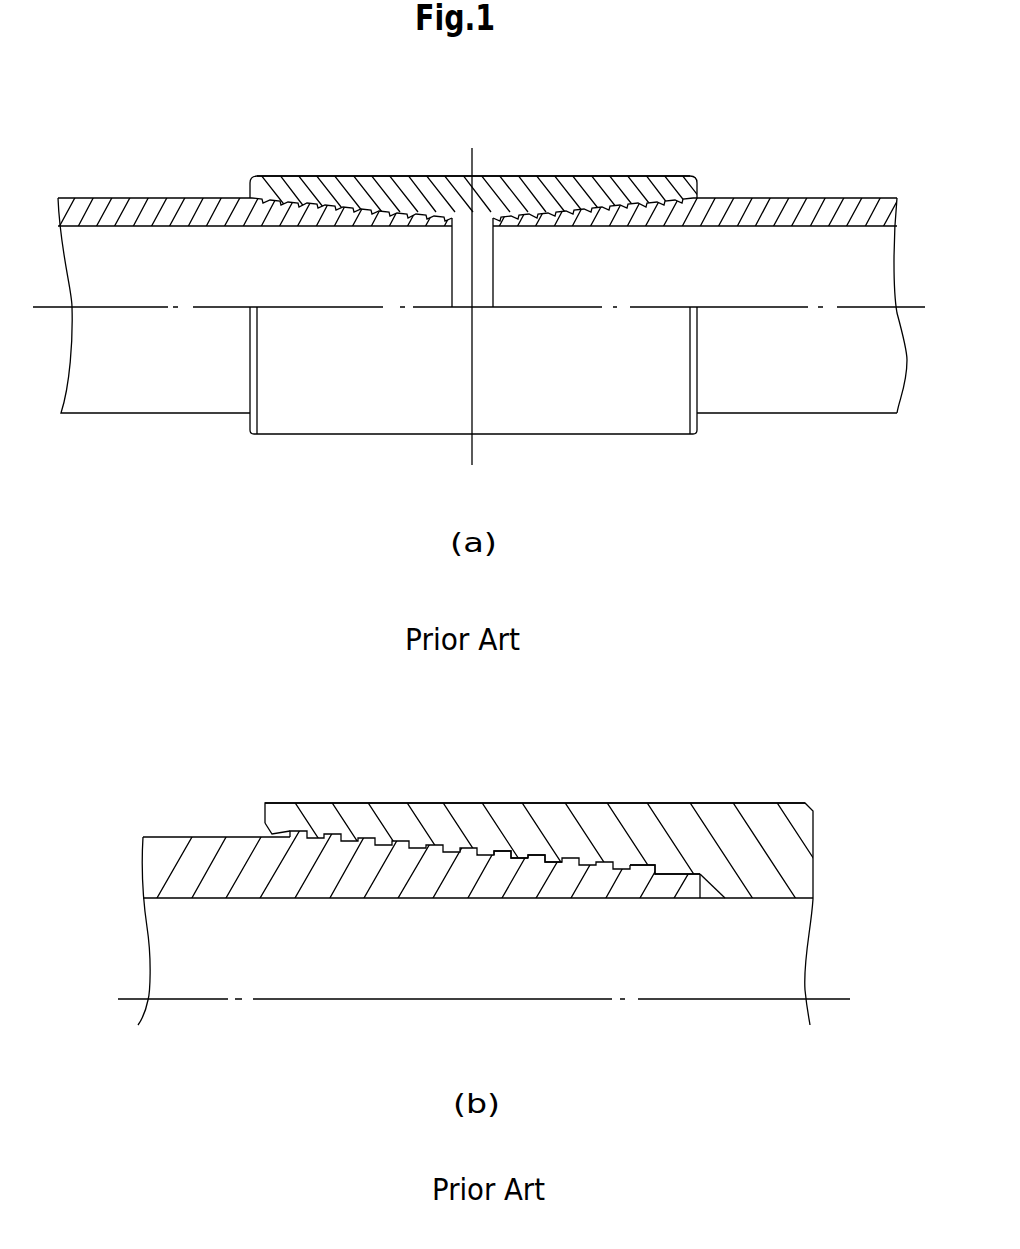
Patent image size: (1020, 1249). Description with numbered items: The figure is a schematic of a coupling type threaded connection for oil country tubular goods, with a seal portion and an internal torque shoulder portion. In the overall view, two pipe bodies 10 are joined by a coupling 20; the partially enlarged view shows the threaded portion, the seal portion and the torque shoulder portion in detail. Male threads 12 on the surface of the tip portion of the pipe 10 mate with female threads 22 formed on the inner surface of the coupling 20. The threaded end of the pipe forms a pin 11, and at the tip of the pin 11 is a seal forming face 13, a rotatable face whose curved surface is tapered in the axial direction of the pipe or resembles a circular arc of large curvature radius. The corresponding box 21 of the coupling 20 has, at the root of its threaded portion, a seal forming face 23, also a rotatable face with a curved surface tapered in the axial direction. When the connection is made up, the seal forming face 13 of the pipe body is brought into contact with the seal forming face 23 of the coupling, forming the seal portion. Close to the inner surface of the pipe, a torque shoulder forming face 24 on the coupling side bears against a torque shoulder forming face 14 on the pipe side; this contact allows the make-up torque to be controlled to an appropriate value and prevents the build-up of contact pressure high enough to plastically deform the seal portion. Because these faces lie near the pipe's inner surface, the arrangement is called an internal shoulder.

The pipe body 10 is at (155, 392).
The pin 11 is at (340, 217).
The male threads 12 is at (545, 860).
The seal forming face 13 is at (678, 883).
The torque shoulder forming face 14 is at (700, 887).
The coupling 20 is at (607, 410).
The box 21 is at (500, 176).
The female threads 22 is at (527, 857).
The seal forming face 23 is at (680, 868).
The torque shoulder forming face 24 is at (707, 892).